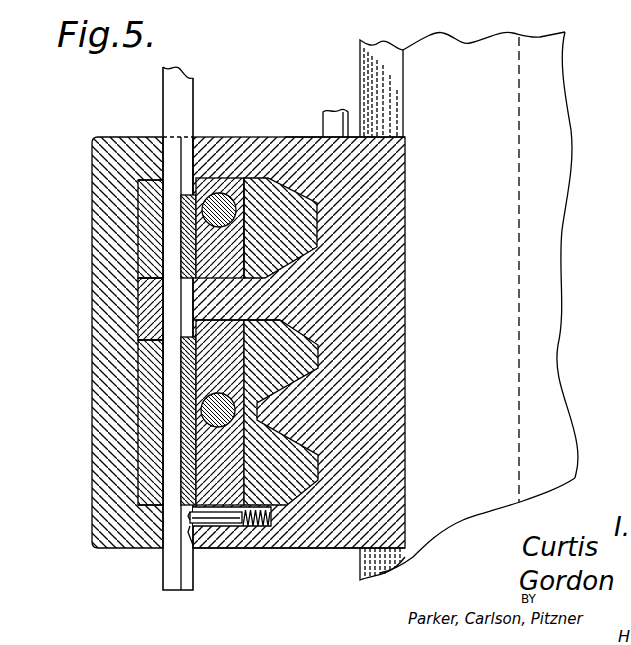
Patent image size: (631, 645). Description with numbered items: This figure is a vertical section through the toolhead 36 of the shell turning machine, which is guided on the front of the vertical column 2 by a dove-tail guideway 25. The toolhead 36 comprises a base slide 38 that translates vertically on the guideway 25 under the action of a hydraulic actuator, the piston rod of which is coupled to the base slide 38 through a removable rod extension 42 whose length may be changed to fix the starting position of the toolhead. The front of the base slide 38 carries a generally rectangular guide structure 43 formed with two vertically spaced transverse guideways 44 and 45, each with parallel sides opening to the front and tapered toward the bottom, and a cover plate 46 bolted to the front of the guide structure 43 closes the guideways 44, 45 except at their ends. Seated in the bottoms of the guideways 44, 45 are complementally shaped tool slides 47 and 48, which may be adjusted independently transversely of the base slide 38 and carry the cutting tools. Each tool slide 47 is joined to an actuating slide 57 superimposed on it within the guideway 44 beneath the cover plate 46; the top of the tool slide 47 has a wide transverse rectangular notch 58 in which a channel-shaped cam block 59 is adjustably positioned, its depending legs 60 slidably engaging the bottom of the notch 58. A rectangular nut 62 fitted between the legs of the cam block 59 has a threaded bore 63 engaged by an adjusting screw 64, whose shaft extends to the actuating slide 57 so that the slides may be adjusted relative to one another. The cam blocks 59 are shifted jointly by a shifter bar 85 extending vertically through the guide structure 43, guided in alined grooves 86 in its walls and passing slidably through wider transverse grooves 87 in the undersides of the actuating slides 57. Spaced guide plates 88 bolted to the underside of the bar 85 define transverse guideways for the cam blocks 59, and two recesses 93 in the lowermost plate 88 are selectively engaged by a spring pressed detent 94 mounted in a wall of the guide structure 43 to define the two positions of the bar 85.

The vertical column 2 is at (555, 292).
The dove-tail guideways 25 is at (377, 50).
The toolhead 36 is at (156, 96).
The base slide 38 is at (403, 157).
The rod extension 42 is at (337, 115).
The guide structure 43 is at (226, 191).
The guideway 44 is at (243, 175).
The guideway 45 is at (305, 490).
The cover plate 46 is at (93, 363).
The tool slide 47 is at (291, 160).
The tool slide 48 is at (287, 507).
The actuating slide 57 is at (145, 242).
The transverse rectangular notch 58 is at (268, 176).
The cam block 59 is at (137, 183).
The depending leg 60 is at (216, 168).
The rectangular nut 62 is at (202, 202).
The threaded bore 63 is at (182, 215).
The adjusting screw 64 is at (197, 222).
The shifter bar 85 is at (183, 78).
The alined grooves 86 is at (162, 143).
The transverse grooves 87 is at (150, 263).
The guide plates 88 is at (187, 297).
The recesses 93 is at (188, 542).
The spring pressed detent 94 is at (228, 523).